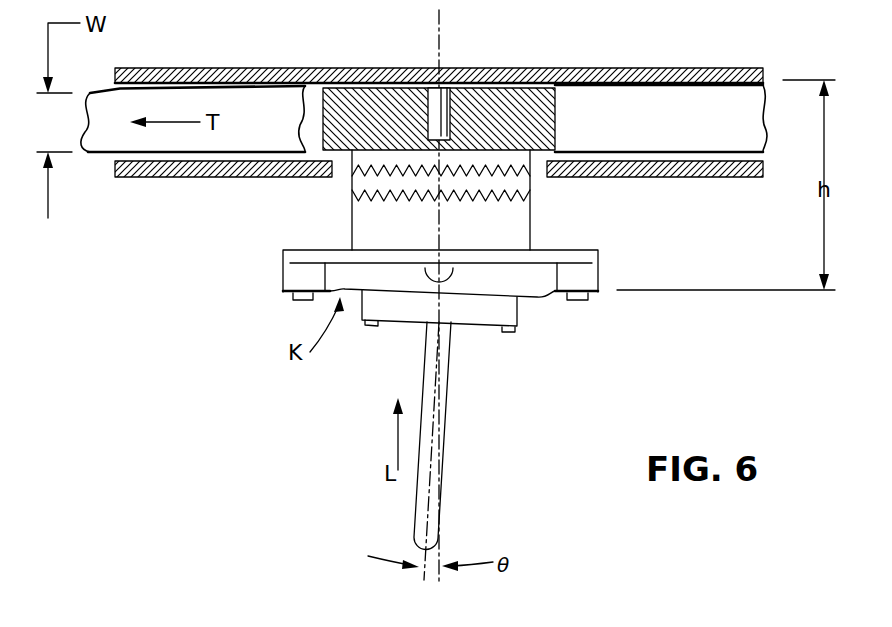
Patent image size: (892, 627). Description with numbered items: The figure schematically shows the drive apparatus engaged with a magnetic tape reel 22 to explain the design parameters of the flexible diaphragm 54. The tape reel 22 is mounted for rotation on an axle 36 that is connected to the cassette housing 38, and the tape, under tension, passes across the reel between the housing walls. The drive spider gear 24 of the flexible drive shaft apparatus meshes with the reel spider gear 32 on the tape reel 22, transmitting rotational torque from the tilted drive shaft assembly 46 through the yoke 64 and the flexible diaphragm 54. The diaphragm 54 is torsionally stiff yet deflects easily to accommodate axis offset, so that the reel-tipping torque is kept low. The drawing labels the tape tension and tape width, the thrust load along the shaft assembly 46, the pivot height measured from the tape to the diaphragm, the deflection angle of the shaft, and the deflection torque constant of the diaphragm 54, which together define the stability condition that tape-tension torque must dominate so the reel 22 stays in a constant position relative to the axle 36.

The tape reel 22 is at (482, 90).
The spider gear 24 is at (440, 200).
The reel spider gear 32 is at (352, 177).
The axle 36 is at (447, 84).
The cassette housing 38 is at (150, 178).
The drive shaft assembly 46 is at (449, 387).
The flexible diaphragm 54 is at (540, 296).
The yoke 64 is at (283, 272).